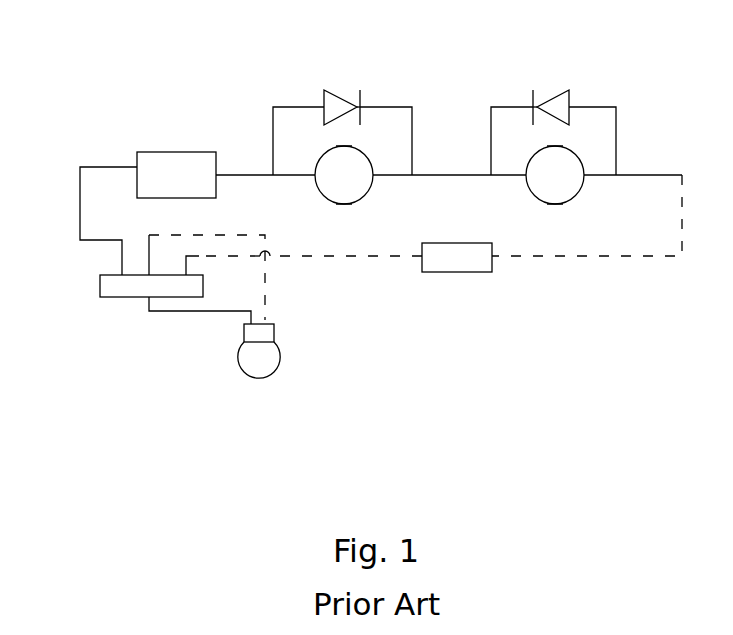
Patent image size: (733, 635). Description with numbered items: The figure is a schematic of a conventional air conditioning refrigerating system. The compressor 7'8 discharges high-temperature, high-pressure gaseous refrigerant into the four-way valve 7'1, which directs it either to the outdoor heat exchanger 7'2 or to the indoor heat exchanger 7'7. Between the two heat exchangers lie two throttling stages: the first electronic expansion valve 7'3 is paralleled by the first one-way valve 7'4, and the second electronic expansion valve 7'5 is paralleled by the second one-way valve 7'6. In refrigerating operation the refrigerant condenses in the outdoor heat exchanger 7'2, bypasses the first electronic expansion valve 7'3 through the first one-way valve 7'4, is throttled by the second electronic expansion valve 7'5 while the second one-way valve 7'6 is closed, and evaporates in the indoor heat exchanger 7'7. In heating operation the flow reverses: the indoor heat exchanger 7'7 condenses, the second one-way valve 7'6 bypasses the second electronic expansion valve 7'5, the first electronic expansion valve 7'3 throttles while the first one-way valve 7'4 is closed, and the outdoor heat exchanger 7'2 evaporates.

The four-way valve 7'1 is at (114, 285).
The outdoor heat exchanger 7'2 is at (176, 146).
The first electronic expansion valve 7'3 is at (329, 163).
The first one-way valve 7'4 is at (342, 80).
The second electronic expansion valve 7'5 is at (534, 163).
The second one-way valve 7'6 is at (565, 81).
The indoor heat exchanger 7'7 is at (461, 288).
The compressor 7'8 is at (269, 381).